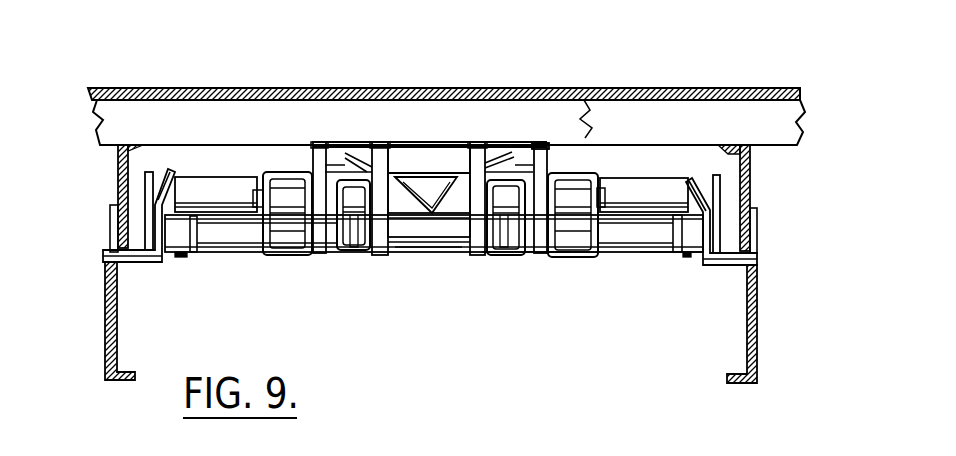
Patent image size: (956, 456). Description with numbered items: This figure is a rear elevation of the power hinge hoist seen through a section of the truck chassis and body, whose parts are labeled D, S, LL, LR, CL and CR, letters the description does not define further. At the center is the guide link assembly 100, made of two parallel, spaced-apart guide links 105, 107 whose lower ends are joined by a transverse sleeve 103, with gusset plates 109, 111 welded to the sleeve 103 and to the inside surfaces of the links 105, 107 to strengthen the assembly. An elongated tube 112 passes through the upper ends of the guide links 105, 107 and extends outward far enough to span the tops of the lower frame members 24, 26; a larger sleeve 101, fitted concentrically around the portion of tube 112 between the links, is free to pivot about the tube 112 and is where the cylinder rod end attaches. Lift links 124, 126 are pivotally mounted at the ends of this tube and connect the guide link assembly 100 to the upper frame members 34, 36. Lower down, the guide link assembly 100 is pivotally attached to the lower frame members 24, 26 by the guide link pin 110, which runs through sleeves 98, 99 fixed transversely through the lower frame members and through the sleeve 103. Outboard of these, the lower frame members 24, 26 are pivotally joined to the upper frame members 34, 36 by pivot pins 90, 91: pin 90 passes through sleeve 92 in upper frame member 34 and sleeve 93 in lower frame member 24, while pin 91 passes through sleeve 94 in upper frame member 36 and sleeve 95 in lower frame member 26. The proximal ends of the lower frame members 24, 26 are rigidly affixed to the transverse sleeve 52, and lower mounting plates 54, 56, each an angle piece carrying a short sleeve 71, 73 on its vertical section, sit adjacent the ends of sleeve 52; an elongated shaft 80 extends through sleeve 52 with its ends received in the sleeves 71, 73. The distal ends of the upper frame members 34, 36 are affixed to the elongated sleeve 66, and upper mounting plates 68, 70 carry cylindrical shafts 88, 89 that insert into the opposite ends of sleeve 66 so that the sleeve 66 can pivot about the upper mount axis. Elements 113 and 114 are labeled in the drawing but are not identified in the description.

The deck D is at (767, 88).
The slab S is at (800, 123).
The left leg LL is at (118, 158).
The right leg LR is at (750, 172).
The left channel CL is at (106, 331).
The right channel CR is at (757, 340).
The upper mounting plate 68 is at (148, 222).
The upper mounting plate 70 is at (715, 233).
The cylindrical shaft 88 is at (163, 200).
The cylindrical shaft 89 is at (698, 180).
The pivot pin 90 is at (240, 196).
The pivot pin 91 is at (608, 203).
The sleeve 92 is at (285, 183).
The transverse sleeve 93 is at (349, 252).
The sleeve 94 is at (572, 190).
The transverse sleeve 95 is at (510, 256).
The lower frame member 24 is at (357, 252).
The upper frame member 34 is at (281, 256).
The elongated sleeve or tube 52 is at (605, 257).
The upper frame member 36 is at (590, 257).
The lower mounting plate 54 is at (156, 265).
The lower mounting plate 56 is at (702, 266).
The short sleeve 71 is at (191, 258).
The short sleeve 73 is at (677, 257).
The elongated shaft 80 is at (665, 258).
The sleeve 98 is at (356, 251).
The sleeve 99 is at (500, 256).
The lower frame member 26 is at (495, 258).
The guide link pin 110 is at (565, 255).
The elongated sleeve or tube 66 is at (657, 178).
The lift link 124 is at (318, 142).
The wedge 113 is at (345, 155).
The lift link 126 is at (578, 135).
The elongated tube 112 is at (373, 138).
The guide link 105 is at (384, 138).
The large sleeve 101 is at (422, 138).
The guide link 107 is at (486, 140).
The post 114 is at (512, 160).
The gusset plate 109 is at (403, 138).
The gusset plate 111 is at (443, 138).
The transverse sleeve 103 is at (445, 258).
The guide link assembly 100 is at (403, 250).